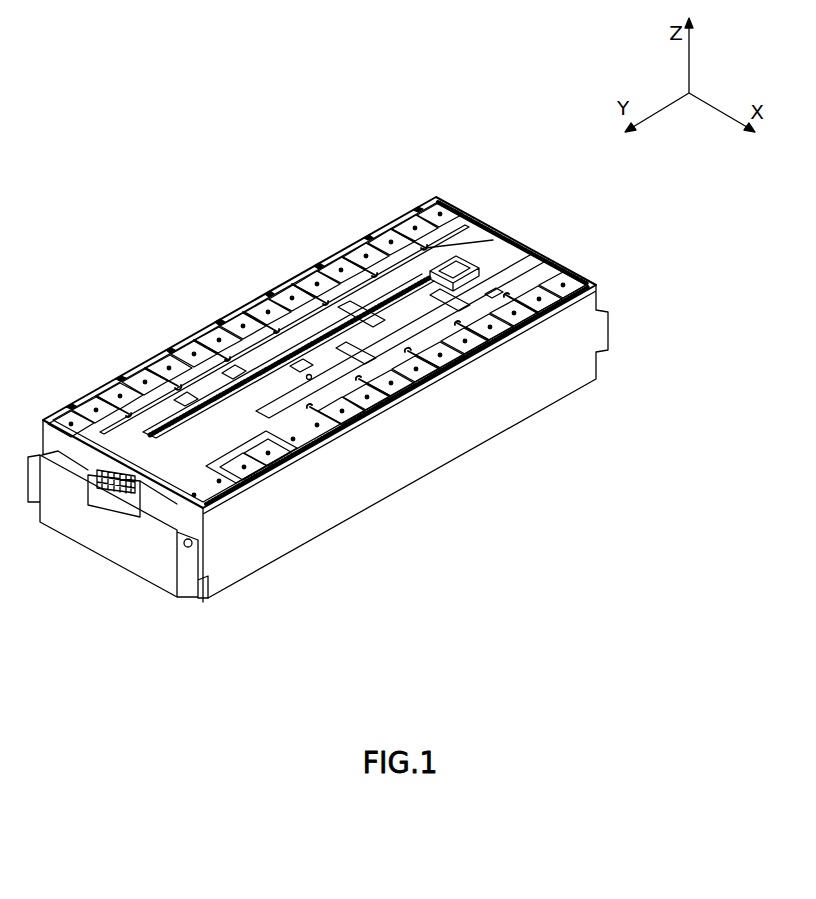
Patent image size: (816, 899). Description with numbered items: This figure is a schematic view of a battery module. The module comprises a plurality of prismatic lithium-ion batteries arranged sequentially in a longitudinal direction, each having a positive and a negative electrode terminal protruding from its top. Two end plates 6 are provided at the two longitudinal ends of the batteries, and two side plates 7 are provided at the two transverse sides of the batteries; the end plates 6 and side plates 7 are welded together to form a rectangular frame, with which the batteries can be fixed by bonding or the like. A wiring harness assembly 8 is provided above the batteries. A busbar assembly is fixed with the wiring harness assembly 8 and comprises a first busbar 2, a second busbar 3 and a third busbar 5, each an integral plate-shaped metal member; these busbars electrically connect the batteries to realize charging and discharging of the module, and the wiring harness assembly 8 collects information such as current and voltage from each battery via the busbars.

The first busbar 2 is at (170, 352).
The second busbar 3 is at (291, 327).
The third busbar 5 is at (501, 248).
The end plate 6 is at (132, 559).
The side plate 7 is at (408, 473).
The wiring harness assembly 8 is at (403, 300).